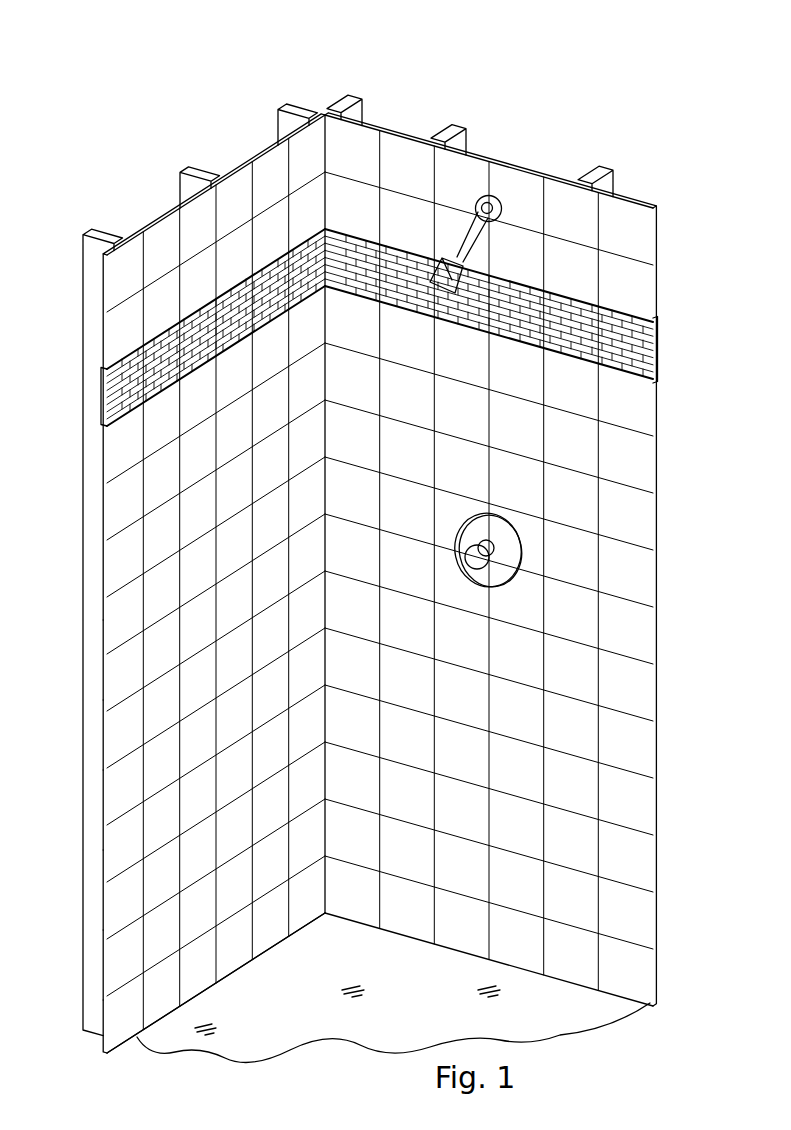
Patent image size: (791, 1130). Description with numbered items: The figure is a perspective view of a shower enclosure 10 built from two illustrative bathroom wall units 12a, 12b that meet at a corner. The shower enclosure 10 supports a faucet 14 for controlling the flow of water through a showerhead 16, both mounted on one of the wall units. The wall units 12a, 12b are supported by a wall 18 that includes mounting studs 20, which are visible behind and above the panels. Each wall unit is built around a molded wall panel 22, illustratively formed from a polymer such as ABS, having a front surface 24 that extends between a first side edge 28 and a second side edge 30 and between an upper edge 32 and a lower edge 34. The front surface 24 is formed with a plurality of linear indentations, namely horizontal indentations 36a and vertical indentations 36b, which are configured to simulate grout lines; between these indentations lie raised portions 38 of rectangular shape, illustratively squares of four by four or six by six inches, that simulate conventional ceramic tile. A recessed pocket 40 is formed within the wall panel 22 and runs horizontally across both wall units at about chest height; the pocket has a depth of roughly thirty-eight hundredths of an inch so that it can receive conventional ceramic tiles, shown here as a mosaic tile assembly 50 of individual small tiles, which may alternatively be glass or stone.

The shower enclosure 10 is at (505, 93).
The bathroom wall unit 12a is at (231, 160).
The bathroom wall unit 12b is at (540, 165).
The faucet 14 is at (522, 548).
The showerhead 16 is at (462, 270).
The wall 18 is at (668, 190).
The mounting studs 20 is at (97, 233).
The molded wall panel 22 is at (103, 480).
The front surface 24 is at (123, 680).
The first side edge 28 is at (100, 985).
The second side edge 30 is at (328, 898).
The upper edge 32 is at (272, 148).
The lower edge 34 is at (270, 952).
The horizontal indentations 36a is at (120, 875).
The vertical indentations 36b is at (143, 788).
The raised portions 38 is at (123, 734).
The recessed pocket 40 is at (659, 345).
The mosaic tile assembly 50 is at (90, 400).